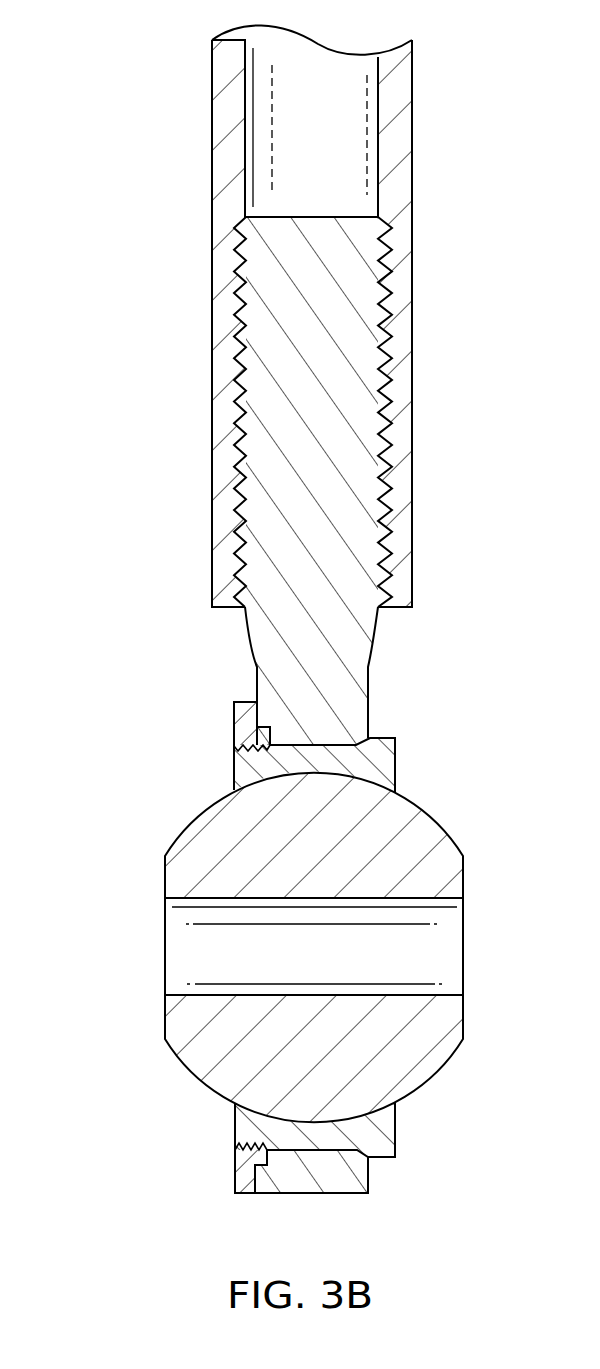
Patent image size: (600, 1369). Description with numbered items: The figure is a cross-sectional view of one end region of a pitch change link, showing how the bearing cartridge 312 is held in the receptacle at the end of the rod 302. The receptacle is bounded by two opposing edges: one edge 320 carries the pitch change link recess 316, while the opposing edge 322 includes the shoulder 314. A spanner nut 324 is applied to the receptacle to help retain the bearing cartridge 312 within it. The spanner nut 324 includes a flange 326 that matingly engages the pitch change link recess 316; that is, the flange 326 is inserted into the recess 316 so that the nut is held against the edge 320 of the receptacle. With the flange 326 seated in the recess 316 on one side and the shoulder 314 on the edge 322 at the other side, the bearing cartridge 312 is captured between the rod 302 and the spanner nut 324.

The rod 302 is at (212, 171).
The bearing cartridge 312 is at (126, 1041).
The edge 320 is at (234, 718).
The edge 322 is at (395, 765).
The shoulder 314 is at (390, 1138).
The pitch change link recess 316 is at (243, 1158).
The spanner nut 324 is at (206, 1194).
The flange 326 is at (267, 1157).